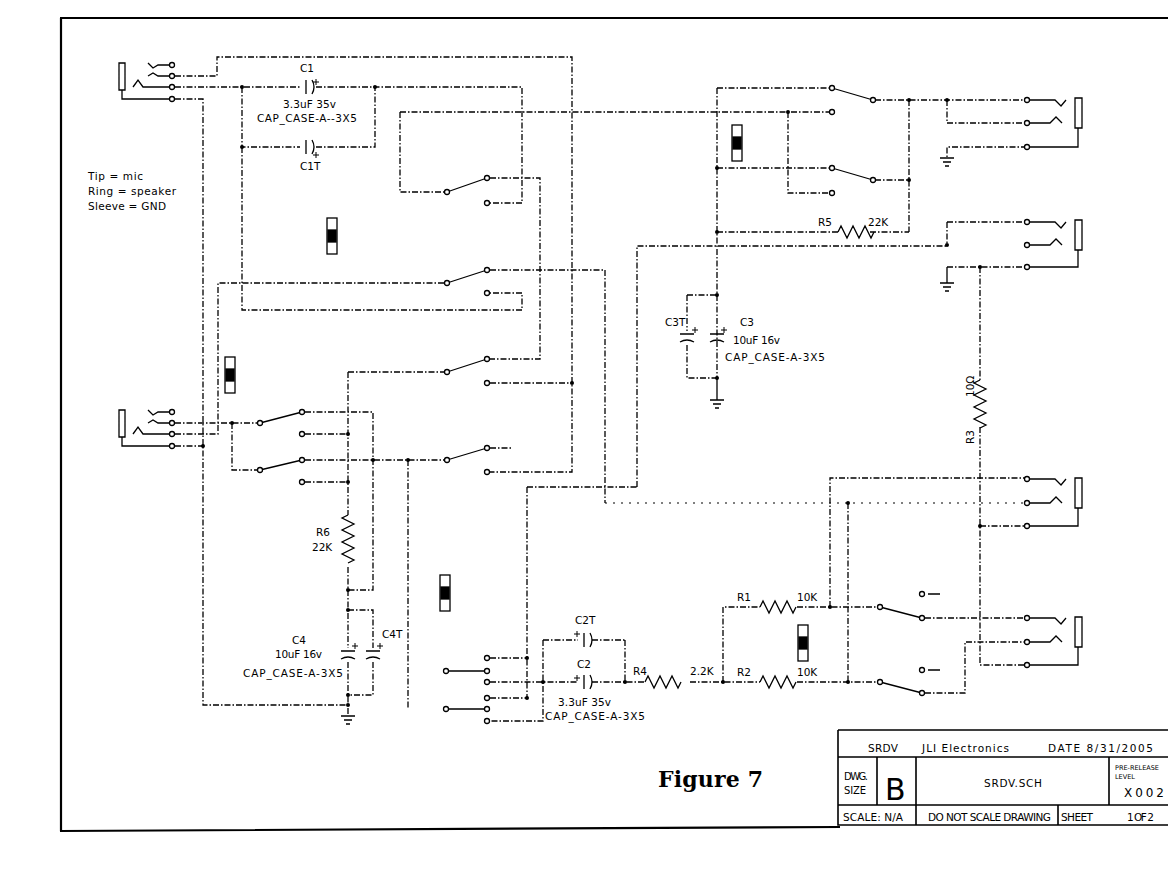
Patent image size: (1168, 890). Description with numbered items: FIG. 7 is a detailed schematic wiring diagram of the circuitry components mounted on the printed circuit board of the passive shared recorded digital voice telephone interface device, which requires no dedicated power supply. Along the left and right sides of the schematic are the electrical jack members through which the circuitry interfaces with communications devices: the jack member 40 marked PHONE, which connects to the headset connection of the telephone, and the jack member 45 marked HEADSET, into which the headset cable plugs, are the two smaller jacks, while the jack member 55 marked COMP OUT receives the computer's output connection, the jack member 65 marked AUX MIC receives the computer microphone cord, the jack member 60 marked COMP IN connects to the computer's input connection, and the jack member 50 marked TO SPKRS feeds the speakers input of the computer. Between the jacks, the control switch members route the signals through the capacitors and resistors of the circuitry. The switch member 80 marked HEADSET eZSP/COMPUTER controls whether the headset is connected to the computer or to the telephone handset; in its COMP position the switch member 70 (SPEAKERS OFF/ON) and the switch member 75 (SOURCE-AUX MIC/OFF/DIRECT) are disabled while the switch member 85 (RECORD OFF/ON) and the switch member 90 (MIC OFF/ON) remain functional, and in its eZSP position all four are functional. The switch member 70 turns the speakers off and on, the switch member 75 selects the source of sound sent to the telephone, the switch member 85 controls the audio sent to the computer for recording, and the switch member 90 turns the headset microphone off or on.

The connection jack member 40 is at (176, 102).
The connection jack member 45 is at (176, 449).
The connection jack member 50 is at (1027, 668).
The connection jack member 55 is at (1027, 150).
The connection jack member 60 is at (1027, 529).
The connection jack member 65 is at (1027, 270).
The switch member 70 is at (801, 652).
The switch member 75 is at (236, 381).
The switch member 80 is at (330, 247).
The switch member 85 is at (735, 148).
The switch member 90 is at (443, 577).